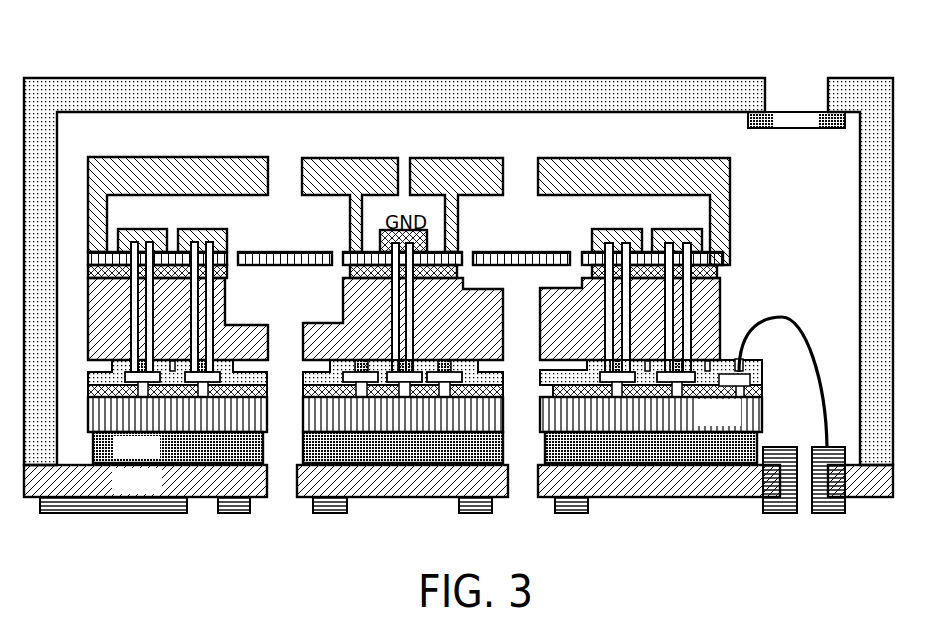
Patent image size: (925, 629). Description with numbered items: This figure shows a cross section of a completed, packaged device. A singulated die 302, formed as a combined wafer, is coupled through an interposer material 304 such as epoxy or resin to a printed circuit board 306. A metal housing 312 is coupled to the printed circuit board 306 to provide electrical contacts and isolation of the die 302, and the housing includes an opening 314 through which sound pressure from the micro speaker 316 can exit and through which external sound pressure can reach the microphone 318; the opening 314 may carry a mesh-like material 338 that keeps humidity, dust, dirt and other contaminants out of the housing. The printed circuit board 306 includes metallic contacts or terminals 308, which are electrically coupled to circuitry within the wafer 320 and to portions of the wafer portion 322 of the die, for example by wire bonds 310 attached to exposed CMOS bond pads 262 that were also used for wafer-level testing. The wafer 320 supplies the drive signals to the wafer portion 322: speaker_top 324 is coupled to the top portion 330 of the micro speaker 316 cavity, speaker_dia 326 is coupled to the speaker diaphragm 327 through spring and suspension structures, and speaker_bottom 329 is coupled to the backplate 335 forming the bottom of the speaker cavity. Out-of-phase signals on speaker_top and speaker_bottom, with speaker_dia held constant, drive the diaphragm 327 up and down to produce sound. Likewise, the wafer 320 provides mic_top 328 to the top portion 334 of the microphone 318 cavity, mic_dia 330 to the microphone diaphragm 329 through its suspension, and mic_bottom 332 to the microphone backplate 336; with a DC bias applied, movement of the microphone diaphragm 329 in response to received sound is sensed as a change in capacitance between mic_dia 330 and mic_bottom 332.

The metal housing 312 is at (107, 105).
The mesh-like material 338 is at (796, 120).
The opening 314 is at (786, 50).
The die 302 is at (766, 201).
The top portion of microspeaker cavity / mic_dia 330 is at (248, 188).
The top portion of microphone cavity 334 is at (588, 188).
The speaker_top 324 is at (142, 290).
The speaker_dia 326 is at (202, 290).
The speaker diaphragm 327 is at (285, 248).
The speaker_bottom / microphone diaphragm 329 is at (290, 379).
The micro speaker 316 is at (293, 233).
The microphone 318 is at (533, 232).
The mic_top 328 is at (617, 290).
The microphone backplate 336 is at (403, 314).
The speaker backplate 335 is at (321, 316).
The mic_bottom 332 is at (524, 400).
The wafer portion 322 is at (588, 331).
The CMOS bond pad 262 is at (734, 380).
The wafer 320 is at (734, 421).
The interposer material 304 is at (154, 459).
The printed circuit board 306 is at (154, 492).
The metallic contact 308 is at (778, 520).
The wire bond 310 is at (773, 316).